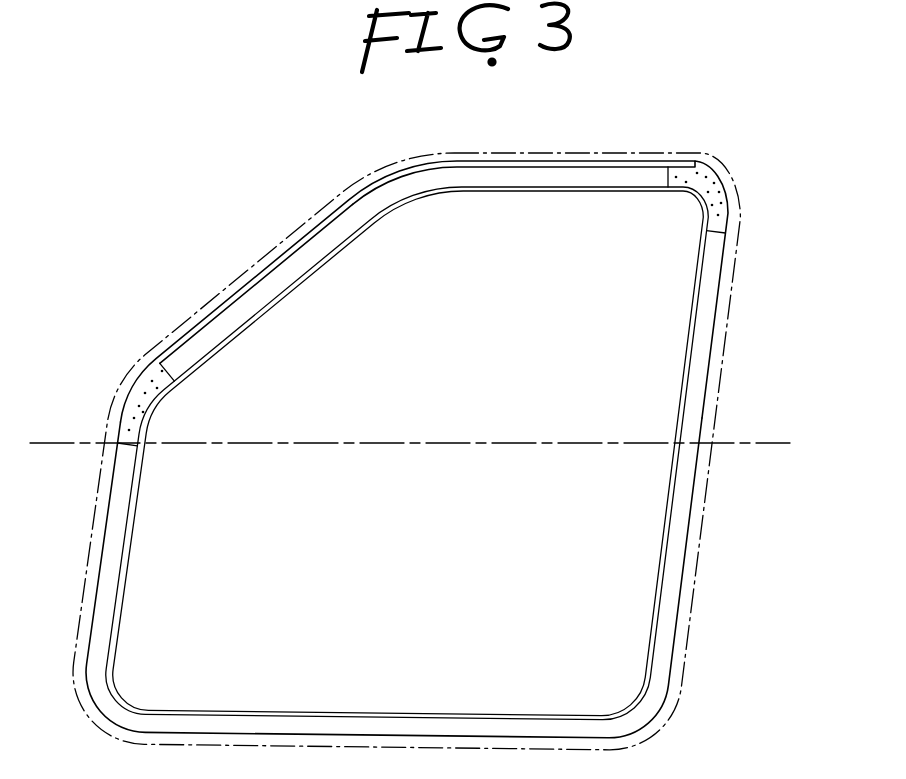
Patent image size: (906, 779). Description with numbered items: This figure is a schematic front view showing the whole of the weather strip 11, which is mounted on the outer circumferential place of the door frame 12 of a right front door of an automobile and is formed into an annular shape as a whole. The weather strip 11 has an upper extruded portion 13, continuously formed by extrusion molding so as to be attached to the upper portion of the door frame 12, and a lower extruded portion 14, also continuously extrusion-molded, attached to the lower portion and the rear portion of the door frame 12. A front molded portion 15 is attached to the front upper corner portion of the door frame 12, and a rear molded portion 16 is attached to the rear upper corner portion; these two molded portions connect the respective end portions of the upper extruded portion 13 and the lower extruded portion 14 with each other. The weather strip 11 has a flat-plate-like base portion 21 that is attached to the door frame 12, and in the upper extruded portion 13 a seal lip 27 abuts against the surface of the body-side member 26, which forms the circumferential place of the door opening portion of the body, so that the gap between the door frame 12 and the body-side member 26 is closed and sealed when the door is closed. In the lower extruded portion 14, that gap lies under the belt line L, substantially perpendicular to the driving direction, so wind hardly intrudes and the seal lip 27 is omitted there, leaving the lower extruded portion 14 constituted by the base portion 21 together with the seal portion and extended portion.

The weather strip 11 is at (231, 276).
The door frame 12 is at (385, 519).
The upper extruded portion 13 is at (364, 198).
The lower extruded portion 14 is at (654, 700).
The front molded portion 15 is at (128, 393).
The rear molded portion 16 is at (719, 183).
The base portion 21 is at (545, 192).
The body-side member 26 is at (728, 339).
The seal lip 27 is at (541, 161).
The belt line L is at (742, 443).